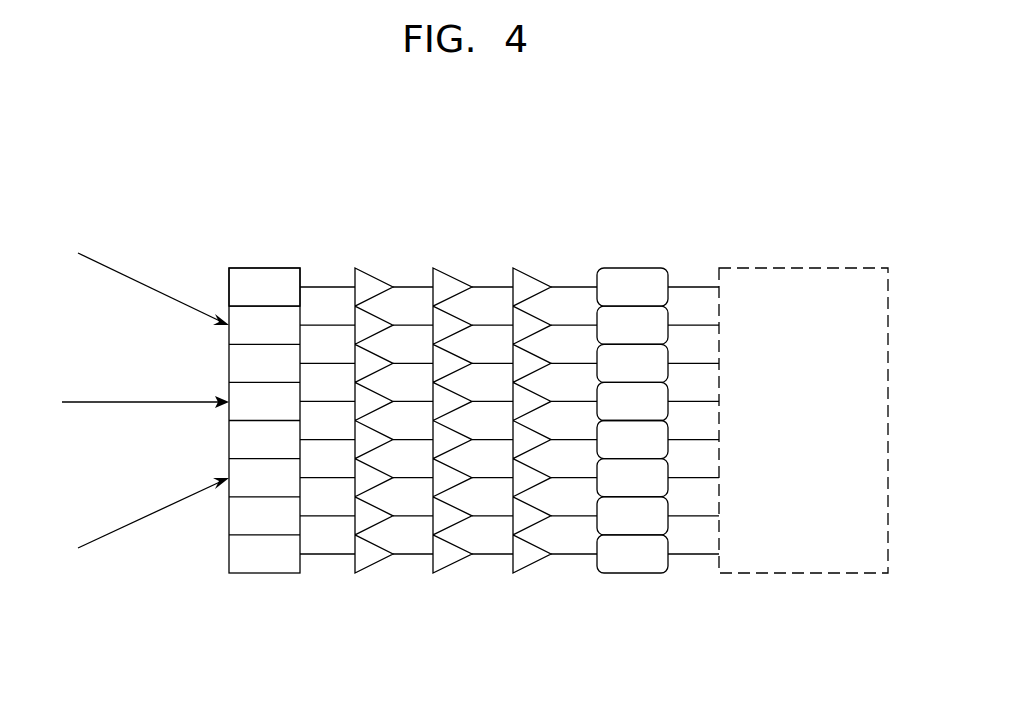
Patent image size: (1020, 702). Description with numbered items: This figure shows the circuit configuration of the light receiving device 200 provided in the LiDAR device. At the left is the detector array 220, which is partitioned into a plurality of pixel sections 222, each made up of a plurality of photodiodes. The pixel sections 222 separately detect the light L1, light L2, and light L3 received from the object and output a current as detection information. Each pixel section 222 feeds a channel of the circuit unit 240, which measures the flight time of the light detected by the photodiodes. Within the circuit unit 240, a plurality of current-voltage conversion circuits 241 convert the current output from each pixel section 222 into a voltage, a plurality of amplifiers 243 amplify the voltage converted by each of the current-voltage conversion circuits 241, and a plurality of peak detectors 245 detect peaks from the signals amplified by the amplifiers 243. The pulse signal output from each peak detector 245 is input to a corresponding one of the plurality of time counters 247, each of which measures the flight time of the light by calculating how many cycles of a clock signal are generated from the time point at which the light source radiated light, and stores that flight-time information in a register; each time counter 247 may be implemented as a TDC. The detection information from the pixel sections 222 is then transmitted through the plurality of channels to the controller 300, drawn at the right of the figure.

The light receiving device 200 is at (697, 202).
The detector array 220 is at (265, 576).
The pixel section 222 is at (265, 274).
The circuit unit 240 is at (355, 627).
The current-voltage conversion circuit 241 is at (373, 278).
The amplifier 243 is at (451, 278).
The peak detector 245 is at (531, 278).
The time counter 247 is at (630, 274).
The controller 300 is at (803, 574).
The light L1 is at (138, 281).
The light L2 is at (131, 403).
The light L3 is at (139, 521).